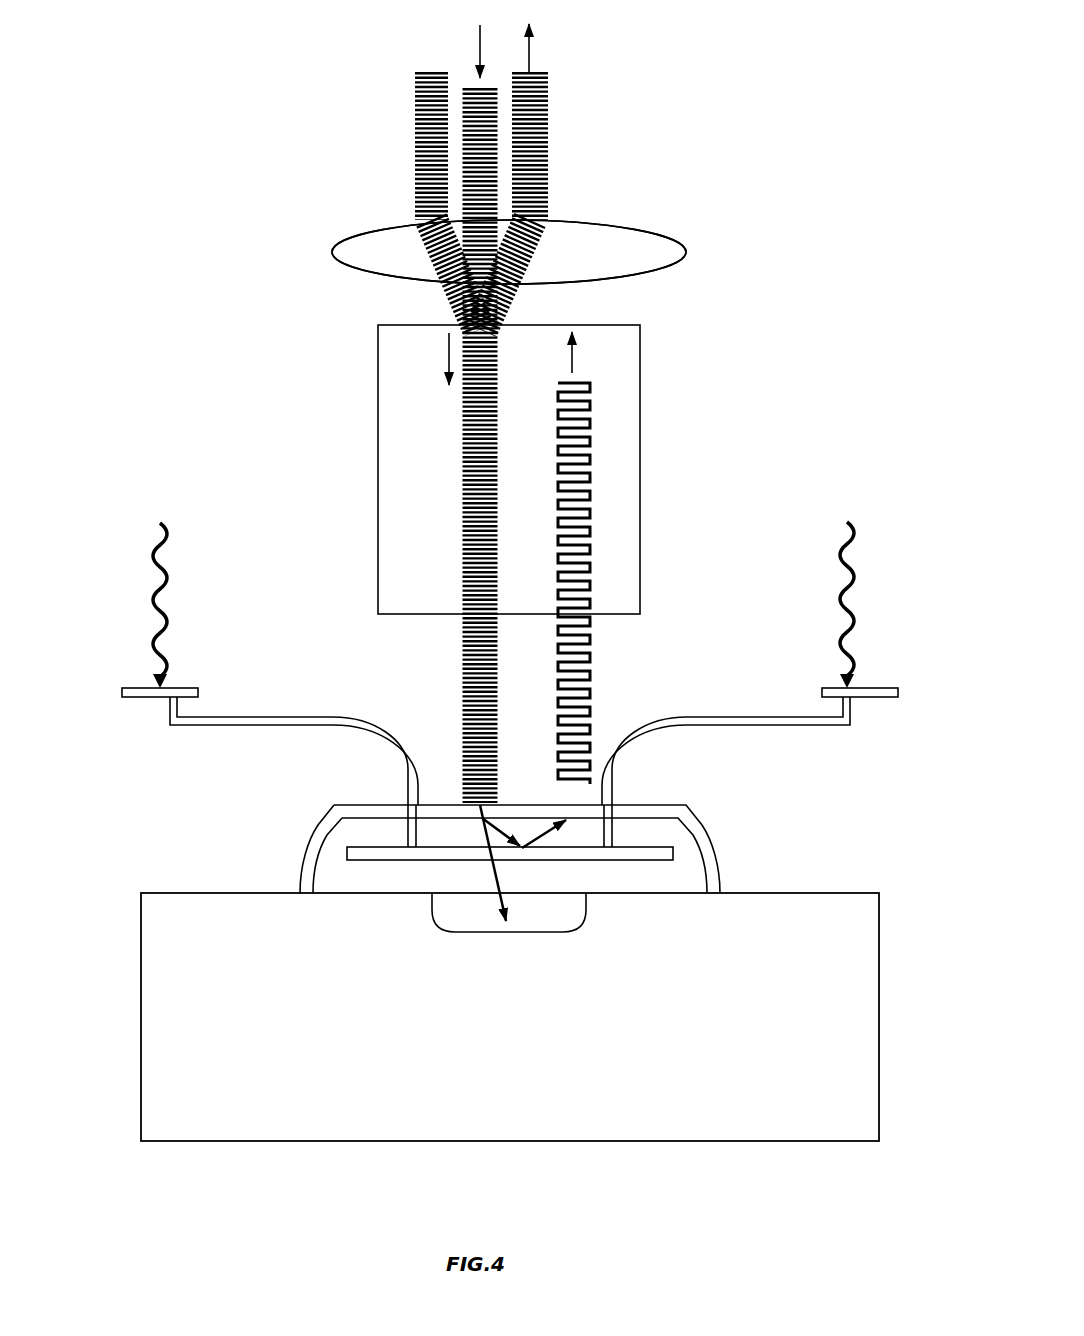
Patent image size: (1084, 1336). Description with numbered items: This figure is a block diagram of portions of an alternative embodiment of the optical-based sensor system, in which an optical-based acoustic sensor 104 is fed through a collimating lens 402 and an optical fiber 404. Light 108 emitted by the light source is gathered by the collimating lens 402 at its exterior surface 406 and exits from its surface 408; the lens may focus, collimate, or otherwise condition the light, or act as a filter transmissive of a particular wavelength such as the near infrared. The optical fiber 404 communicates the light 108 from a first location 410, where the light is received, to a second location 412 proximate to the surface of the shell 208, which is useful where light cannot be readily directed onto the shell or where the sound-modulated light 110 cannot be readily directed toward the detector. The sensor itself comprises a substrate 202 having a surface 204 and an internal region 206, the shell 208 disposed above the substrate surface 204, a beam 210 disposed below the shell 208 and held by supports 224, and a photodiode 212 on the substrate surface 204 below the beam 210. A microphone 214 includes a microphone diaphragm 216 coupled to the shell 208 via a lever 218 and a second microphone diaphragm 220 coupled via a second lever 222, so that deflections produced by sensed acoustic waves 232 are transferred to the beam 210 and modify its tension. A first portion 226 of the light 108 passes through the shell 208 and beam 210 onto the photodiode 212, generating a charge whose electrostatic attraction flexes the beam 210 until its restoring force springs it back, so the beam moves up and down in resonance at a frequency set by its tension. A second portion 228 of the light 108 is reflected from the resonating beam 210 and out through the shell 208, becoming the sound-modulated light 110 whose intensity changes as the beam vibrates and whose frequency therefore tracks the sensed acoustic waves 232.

The optical-based acoustic sensor 104 is at (232, 682).
The light 108 is at (396, 153).
The sound-modulated light 110 is at (591, 440).
The substrate 202 is at (206, 1142).
The substrate surface 204 is at (336, 895).
The internal region 206 is at (510, 1042).
The shell 208 is at (308, 848).
The beam 210 is at (382, 860).
The photodiode 212 is at (434, 913).
The microphone 214 is at (240, 726).
The microphone diaphragm 216 is at (127, 688).
The lever 218 is at (248, 727).
The second microphone diaphragm 220 is at (892, 688).
The second lever 222 is at (770, 727).
The supports 224 is at (406, 831).
The first portion of light 226 is at (493, 910).
The second portion of light 228 is at (504, 818).
The acoustic waves 232 is at (178, 603).
The collimating lens 402 is at (577, 253).
The optical fiber 404 is at (641, 364).
The exterior surface 406 is at (645, 229).
The surface 408 is at (642, 274).
The first location 410 is at (618, 50).
The second location 412 is at (557, 554).